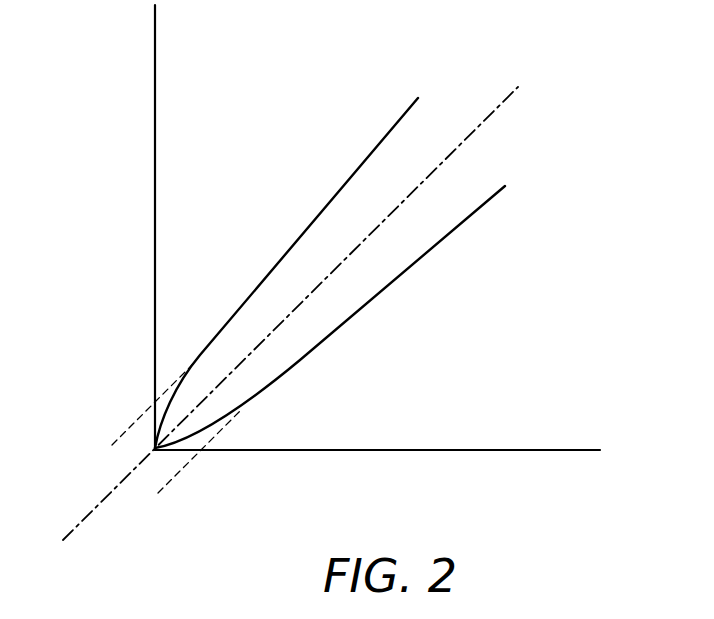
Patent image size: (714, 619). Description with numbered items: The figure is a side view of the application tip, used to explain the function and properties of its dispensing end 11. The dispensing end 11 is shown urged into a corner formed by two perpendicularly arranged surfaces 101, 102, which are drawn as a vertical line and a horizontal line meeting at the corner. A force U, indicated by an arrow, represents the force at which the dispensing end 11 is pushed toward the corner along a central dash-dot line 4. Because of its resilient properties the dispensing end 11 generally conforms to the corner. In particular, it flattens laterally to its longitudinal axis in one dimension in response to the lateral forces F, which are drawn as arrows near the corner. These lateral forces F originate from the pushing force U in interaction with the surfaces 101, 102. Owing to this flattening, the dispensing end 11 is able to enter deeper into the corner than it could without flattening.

The surface 101 is at (155, 86).
The surface 102 is at (502, 452).
The symmetry axis (dash-dot line) 4 is at (485, 117).
The dispensing end 11 is at (427, 230).
The force U is at (548, 66).
The lateral forces F is at (153, 438).